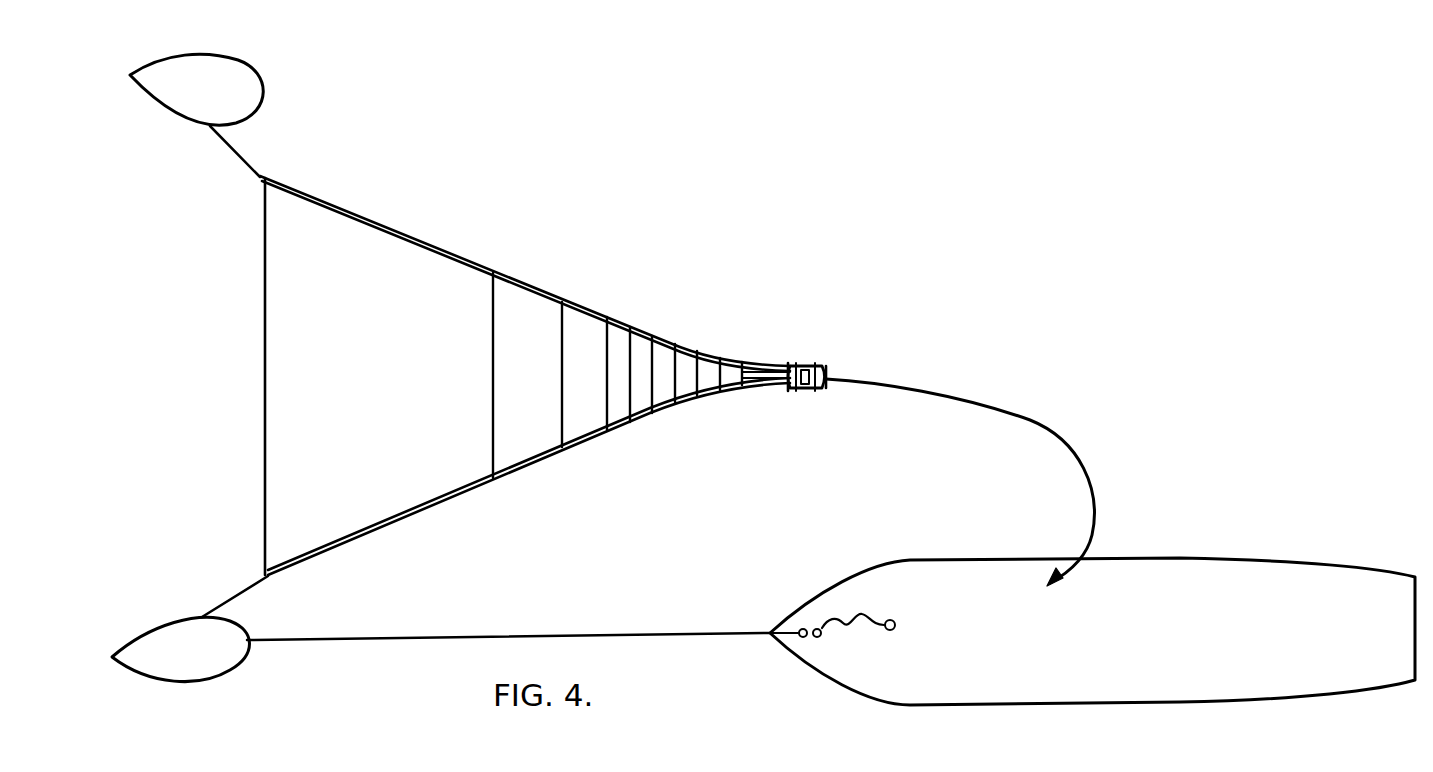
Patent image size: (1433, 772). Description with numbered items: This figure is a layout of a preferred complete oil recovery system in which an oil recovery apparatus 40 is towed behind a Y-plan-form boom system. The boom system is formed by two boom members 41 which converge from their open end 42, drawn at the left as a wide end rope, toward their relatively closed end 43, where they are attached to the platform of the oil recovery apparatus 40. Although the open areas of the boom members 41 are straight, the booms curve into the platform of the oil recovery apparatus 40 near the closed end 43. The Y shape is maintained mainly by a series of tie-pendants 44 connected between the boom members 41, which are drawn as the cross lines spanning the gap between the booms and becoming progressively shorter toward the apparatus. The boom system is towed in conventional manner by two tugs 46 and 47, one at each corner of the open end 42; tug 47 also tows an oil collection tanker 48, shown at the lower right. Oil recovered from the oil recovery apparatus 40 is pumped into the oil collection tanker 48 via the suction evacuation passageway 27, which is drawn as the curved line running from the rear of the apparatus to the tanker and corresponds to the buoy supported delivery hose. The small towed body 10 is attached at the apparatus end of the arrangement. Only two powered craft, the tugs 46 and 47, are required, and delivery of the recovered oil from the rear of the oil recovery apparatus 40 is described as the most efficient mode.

The towing body / towed vehicle 10 is at (808, 393).
The suction evacuation passageway 27 is at (1053, 435).
The oil recovery apparatus 40 is at (818, 355).
The boom members 41 is at (430, 242).
The open end 42 is at (277, 412).
The relatively closed end 43 is at (753, 377).
The tie-pendants 44 is at (628, 345).
The tug 46 is at (250, 99).
The tug 47 is at (238, 663).
The oil collection tanker 48 is at (1193, 568).